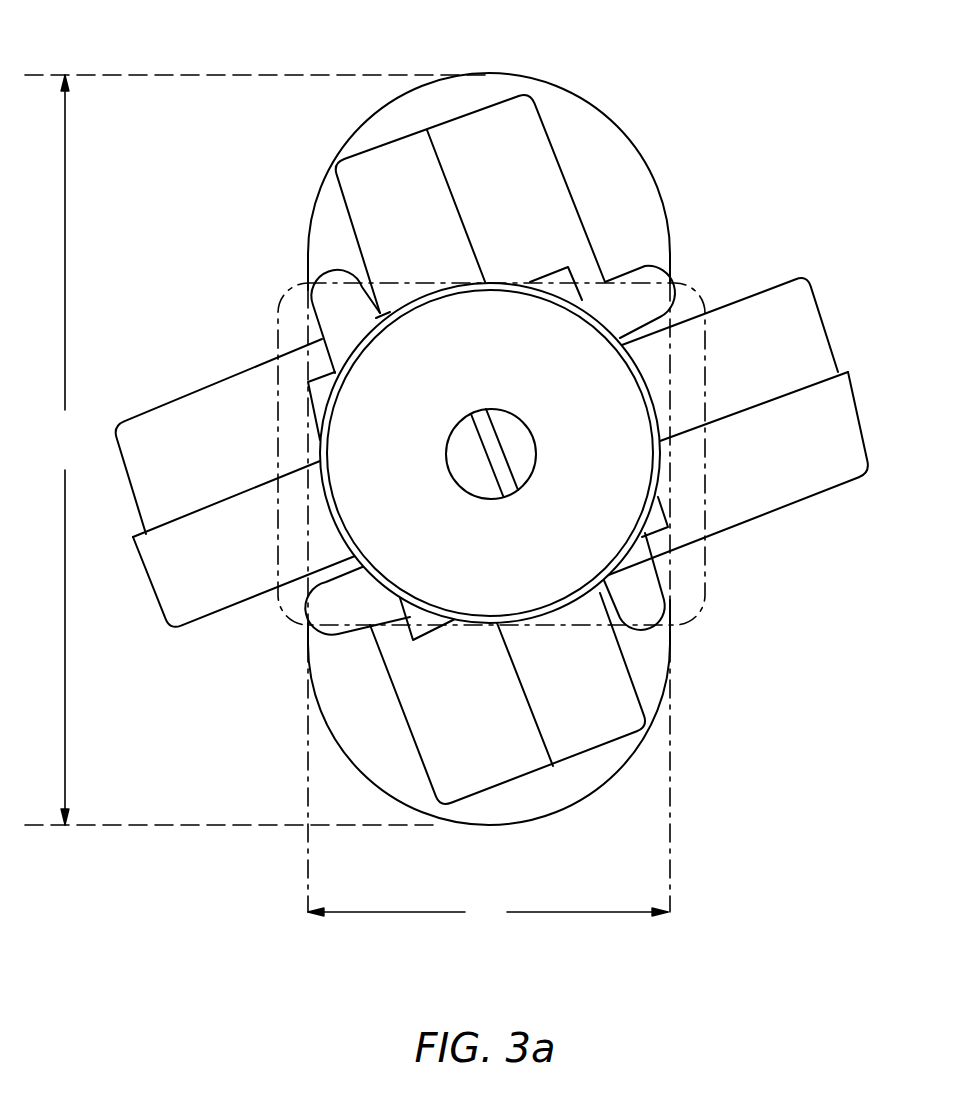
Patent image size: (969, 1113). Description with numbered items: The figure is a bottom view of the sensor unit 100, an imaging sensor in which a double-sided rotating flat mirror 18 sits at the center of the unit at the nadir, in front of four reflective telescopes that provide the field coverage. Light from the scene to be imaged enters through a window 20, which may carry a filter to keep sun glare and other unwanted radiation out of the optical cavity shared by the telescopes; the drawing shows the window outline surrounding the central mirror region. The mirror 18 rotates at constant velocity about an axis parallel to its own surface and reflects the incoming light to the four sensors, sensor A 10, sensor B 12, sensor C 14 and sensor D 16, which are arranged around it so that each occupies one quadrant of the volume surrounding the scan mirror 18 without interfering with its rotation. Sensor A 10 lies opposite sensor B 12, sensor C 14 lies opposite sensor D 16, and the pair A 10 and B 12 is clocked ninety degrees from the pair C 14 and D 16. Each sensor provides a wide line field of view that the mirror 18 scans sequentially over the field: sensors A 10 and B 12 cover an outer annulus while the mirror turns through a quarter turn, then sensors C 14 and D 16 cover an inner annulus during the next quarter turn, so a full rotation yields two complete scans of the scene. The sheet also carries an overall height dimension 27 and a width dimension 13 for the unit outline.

The sensor unit 100 is at (693, 72).
The sensor A 10 is at (178, 430).
The sensor B 12 is at (797, 473).
The sensor C 14 is at (518, 157).
The sensor D 16 is at (458, 702).
The double-sided rotating flat mirror 18 is at (492, 435).
The window 20 is at (685, 583).
The overall height dimension 27 is at (257, 450).
The width dimension 13 is at (489, 785).